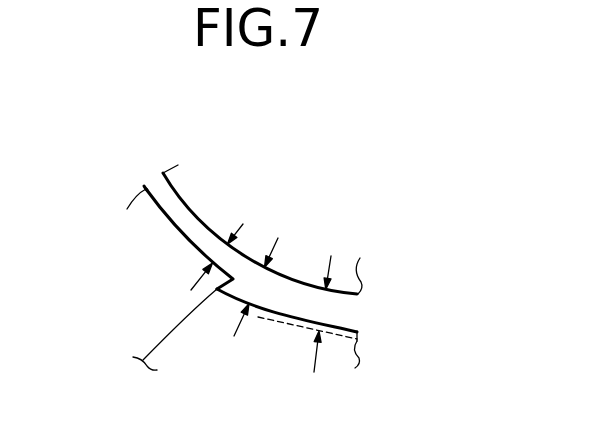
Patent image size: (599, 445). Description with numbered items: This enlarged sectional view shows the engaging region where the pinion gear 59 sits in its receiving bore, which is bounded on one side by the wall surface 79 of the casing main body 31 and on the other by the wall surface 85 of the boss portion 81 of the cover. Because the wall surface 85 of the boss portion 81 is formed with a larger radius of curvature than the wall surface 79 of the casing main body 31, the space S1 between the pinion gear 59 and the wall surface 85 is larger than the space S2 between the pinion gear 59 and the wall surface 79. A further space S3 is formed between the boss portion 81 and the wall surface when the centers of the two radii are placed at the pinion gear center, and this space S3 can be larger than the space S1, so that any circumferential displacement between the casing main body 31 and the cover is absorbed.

The casing main body 31 is at (131, 214).
The pinion gear 59 is at (192, 154).
The wall surface 79 is at (149, 188).
The wall surface 85 is at (340, 328).
The boss portion 81 is at (358, 348).
The space S1 is at (258, 290).
The space S2 is at (204, 257).
The space S3 is at (326, 307).